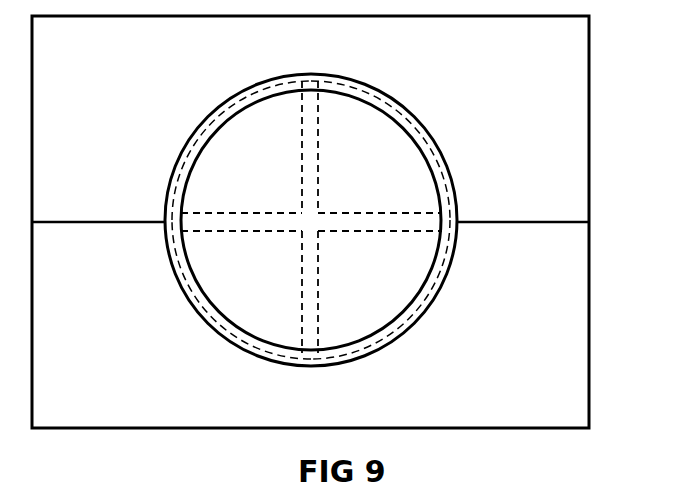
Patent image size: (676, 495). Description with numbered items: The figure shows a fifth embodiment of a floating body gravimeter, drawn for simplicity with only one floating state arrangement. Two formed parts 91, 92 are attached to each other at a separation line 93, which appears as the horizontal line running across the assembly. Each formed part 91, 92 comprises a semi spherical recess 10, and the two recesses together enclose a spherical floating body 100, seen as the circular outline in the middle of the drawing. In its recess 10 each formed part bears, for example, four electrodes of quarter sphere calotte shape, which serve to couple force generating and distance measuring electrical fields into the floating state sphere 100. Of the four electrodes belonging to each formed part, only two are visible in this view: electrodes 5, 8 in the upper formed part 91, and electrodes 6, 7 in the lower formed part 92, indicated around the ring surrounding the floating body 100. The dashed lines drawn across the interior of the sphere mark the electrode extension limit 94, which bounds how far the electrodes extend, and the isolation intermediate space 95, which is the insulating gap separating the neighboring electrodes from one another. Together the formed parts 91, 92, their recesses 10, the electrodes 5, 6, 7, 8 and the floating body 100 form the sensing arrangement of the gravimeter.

The semi spherical recess 10 is at (367, 82).
The spherical floating body 100 is at (262, 116).
The electrode 5 is at (428, 144).
The electrode 6 is at (425, 302).
The electrode 7 is at (198, 303).
The electrode 8 is at (192, 144).
The formed part 91 is at (578, 125).
The formed part 92 is at (577, 327).
The separation line 93 is at (90, 221).
The electrode extension limit 94 is at (236, 212).
The isolation intermediate space 95 is at (311, 358).